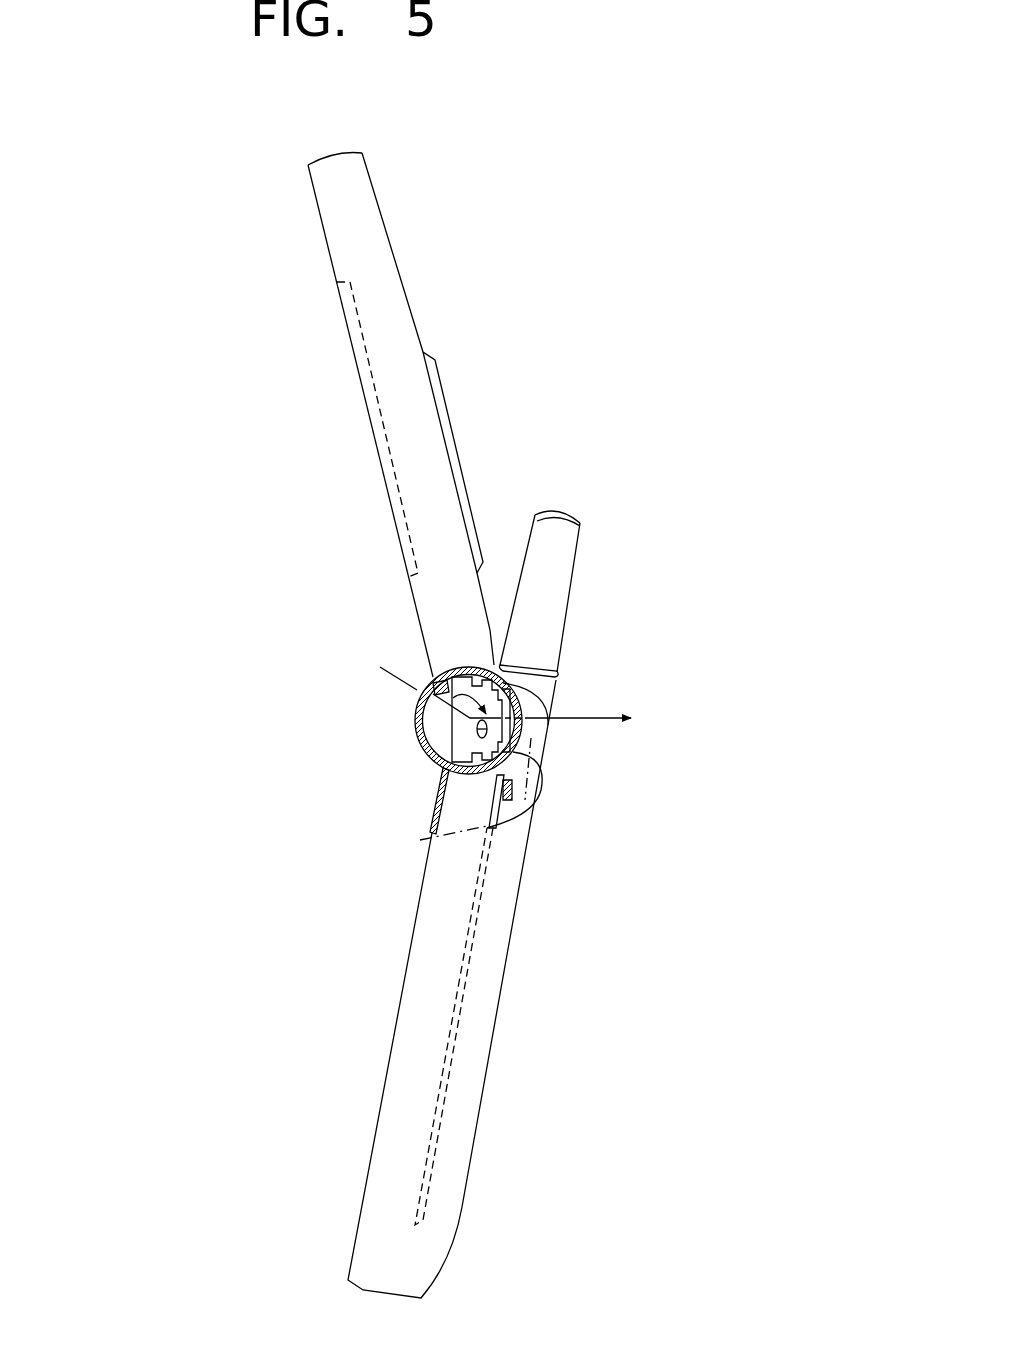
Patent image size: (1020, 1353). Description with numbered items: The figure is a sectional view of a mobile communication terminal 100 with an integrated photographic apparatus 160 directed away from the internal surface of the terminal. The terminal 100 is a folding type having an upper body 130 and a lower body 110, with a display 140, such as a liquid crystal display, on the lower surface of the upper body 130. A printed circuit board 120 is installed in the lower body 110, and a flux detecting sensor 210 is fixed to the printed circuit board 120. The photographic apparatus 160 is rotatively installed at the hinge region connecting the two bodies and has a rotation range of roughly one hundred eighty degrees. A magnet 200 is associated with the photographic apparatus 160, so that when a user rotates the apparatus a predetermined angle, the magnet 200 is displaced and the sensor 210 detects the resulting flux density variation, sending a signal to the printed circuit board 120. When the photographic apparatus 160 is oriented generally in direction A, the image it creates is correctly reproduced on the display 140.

The mobile communication terminal 100 is at (146, 489).
The lower body 110 is at (483, 997).
The printed circuit board 120 is at (520, 812).
The upper body 130 is at (395, 295).
The display 140 is at (382, 417).
The photographic apparatus 160 is at (423, 758).
The magnet 200 is at (431, 676).
The flux detecting sensor 210 is at (513, 790).